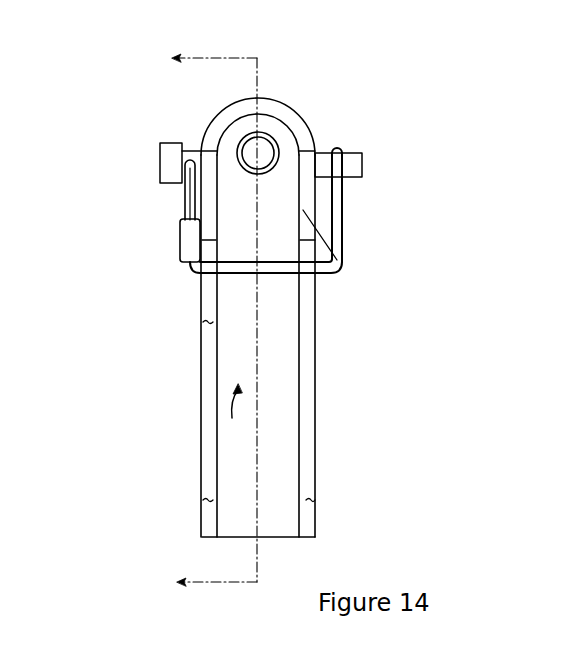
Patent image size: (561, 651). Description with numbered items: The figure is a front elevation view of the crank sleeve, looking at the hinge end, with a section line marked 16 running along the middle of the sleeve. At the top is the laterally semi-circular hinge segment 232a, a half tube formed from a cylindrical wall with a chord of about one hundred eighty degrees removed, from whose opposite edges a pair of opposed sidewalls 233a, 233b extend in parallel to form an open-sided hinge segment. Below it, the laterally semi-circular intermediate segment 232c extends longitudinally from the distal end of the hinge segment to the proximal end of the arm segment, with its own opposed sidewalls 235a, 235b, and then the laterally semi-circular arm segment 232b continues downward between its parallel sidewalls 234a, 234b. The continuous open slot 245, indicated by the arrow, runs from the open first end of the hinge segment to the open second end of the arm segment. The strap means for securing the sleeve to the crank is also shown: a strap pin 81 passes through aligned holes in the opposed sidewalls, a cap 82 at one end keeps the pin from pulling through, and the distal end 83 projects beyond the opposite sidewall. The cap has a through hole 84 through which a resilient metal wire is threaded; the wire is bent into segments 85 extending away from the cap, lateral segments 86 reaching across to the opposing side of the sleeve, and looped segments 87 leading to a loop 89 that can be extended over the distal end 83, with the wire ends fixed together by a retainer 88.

The section line 16- 16 is at (214, 324).
The strap pin 81 is at (323, 170).
The cap 82 is at (173, 163).
The distal end 83 is at (350, 165).
The through hole 84 is at (190, 166).
The segments 85 is at (192, 198).
The lateral segments 86 is at (235, 307).
The looped segments 87 is at (343, 210).
The retainer 88 is at (190, 268).
The loop 89 is at (342, 148).
The semi-circular hinge segment 232a is at (222, 112).
The semi-circular arm segment 232b is at (282, 443).
The semi-circular intermediate segment 232c is at (275, 222).
The sidewall 233a is at (180, 257).
The sidewall 233b is at (343, 262).
The sidewall 234a is at (217, 475).
The sidewall 234b is at (308, 482).
The sidewall 235a is at (212, 208).
The sidewall 235b is at (315, 272).
The continuous open slot 245 is at (232, 420).